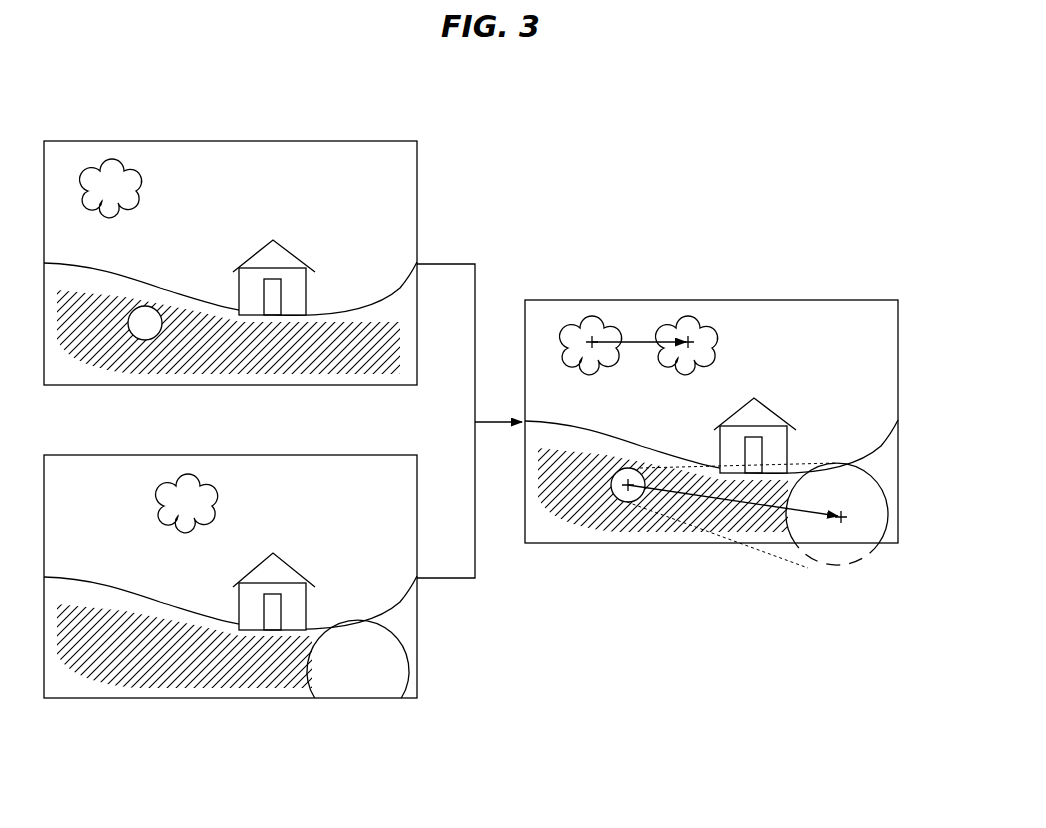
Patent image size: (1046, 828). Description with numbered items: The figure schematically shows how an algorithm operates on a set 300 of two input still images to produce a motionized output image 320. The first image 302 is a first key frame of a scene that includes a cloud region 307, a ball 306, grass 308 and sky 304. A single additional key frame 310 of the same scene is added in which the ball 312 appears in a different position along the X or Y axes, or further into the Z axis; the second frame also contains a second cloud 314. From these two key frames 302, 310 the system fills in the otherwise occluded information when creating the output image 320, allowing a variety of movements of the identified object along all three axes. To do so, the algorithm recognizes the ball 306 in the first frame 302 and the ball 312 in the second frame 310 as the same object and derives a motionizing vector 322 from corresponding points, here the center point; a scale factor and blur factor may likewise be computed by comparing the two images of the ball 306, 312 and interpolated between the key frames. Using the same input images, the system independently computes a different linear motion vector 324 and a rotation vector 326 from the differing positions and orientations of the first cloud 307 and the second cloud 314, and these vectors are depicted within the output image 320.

The set of two input still images 300 is at (781, 58).
The first image 302 is at (375, 134).
The sky 304 is at (395, 205).
The ball 306 is at (137, 330).
The cloud region 307 is at (113, 170).
The grass 308 is at (333, 362).
The second key frame 310 is at (215, 447).
The ball in second frame 312 is at (378, 680).
The second cloud 314 is at (185, 490).
The output image 320 is at (745, 294).
The motionizing vector 322 is at (740, 502).
The linear motion vector 324 is at (634, 342).
The rotation vector 326 is at (686, 328).